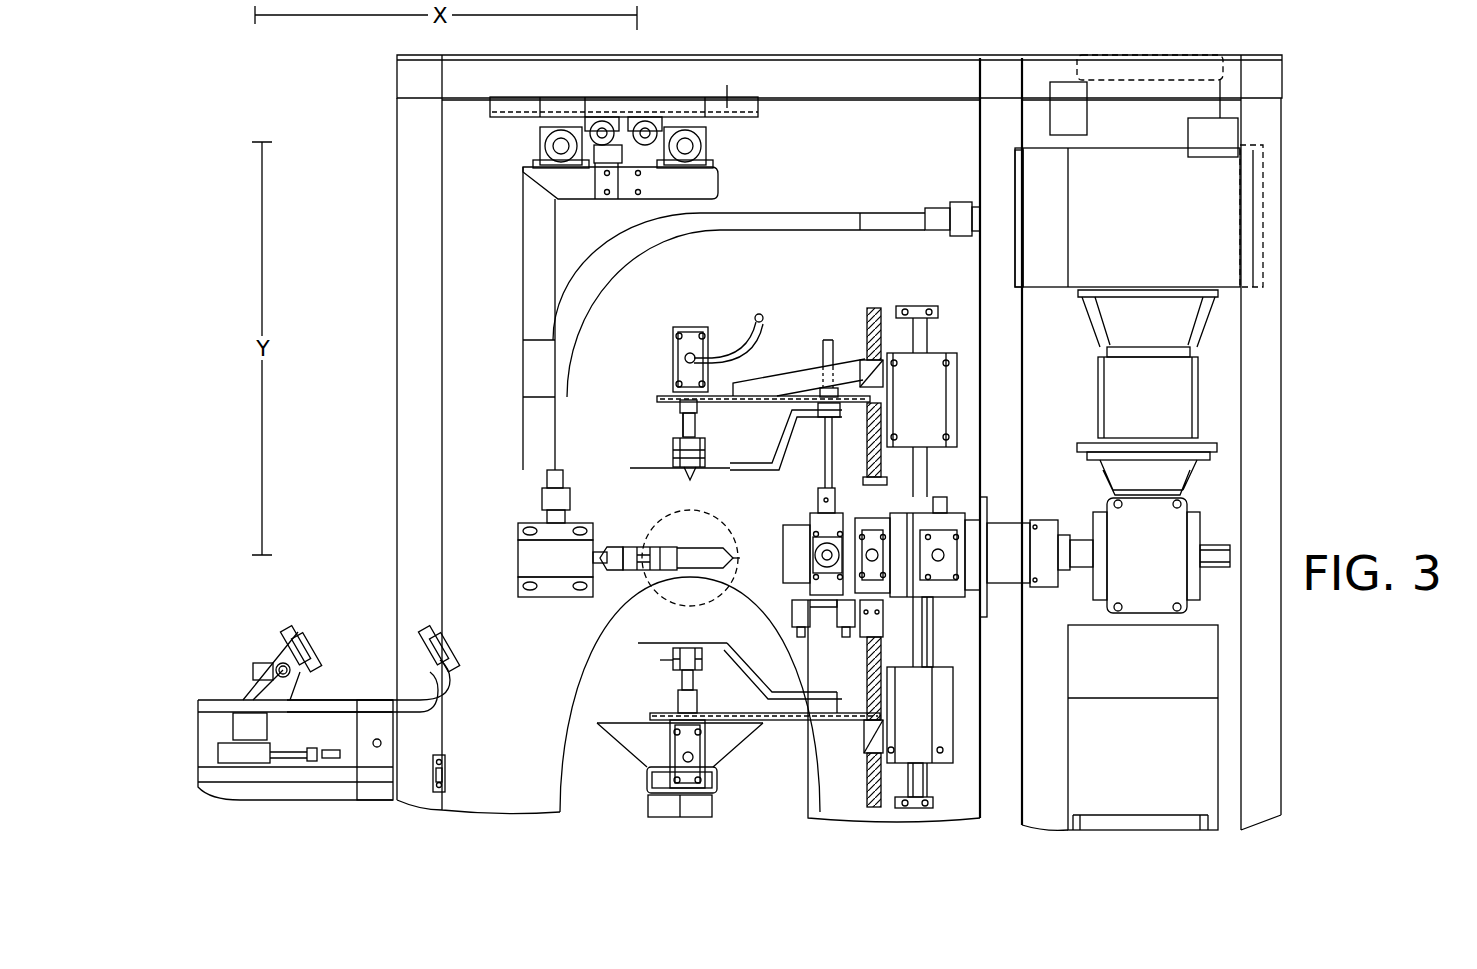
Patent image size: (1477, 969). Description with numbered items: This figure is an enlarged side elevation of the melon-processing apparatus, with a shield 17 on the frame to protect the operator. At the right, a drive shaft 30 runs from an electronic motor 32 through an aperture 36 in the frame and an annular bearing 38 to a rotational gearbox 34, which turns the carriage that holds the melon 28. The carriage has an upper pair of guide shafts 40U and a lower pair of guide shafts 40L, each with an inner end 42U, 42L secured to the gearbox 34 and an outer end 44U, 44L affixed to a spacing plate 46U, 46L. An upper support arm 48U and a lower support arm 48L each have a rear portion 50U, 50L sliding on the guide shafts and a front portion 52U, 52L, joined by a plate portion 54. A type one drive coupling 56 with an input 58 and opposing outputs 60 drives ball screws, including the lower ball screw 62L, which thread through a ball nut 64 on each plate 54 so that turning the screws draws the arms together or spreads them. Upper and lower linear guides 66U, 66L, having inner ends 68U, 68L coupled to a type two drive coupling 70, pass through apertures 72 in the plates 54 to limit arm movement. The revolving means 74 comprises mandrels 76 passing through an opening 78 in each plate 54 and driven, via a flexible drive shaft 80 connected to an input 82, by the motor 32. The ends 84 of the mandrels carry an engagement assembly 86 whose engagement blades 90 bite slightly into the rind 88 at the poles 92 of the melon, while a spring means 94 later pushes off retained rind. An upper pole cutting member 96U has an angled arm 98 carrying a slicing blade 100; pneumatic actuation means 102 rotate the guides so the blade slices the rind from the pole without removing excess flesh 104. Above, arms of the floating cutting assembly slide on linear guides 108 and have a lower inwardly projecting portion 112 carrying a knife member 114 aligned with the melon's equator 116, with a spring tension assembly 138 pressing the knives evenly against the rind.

The shield 17 is at (740, 442).
The melon 28 is at (654, 592).
The drive shaft 30 is at (1037, 593).
The electronic motor 32 is at (1148, 615).
The rotational gearbox 34 is at (985, 497).
The aperture 36 is at (1057, 490).
The annular bearing 38 is at (977, 583).
The upper pair of guide shafts 40U is at (990, 282).
The lower pair of guide shafts 40L is at (930, 775).
The inner end of upper guide shafts 42U is at (863, 477).
The inner end of lower guide shafts 42L is at (885, 598).
The outer end of upper guide shafts 44U is at (1020, 235).
The outer end of lower guide shafts 44L is at (937, 797).
The upper spacing plate 46U is at (896, 305).
The lower spacing plate 46L is at (918, 808).
The upper support arm 48U is at (803, 353).
The lower support arm 48L is at (773, 763).
The rear portion of upper support arm 50U is at (862, 405).
The rear portion of lower support arm 50L is at (950, 715).
The front portion of upper support arm 52U is at (758, 380).
The front portion of lower support arm 52L is at (765, 723).
The plate portion 54 is at (777, 402).
The type one drive coupling 56 is at (876, 558).
The input 58 is at (947, 590).
The outputs 60 is at (947, 462).
The lower ball screw 62L is at (872, 807).
The ball nut 64 is at (858, 340).
The upper linear guide 66U is at (820, 460).
The lower linear guide 66L is at (835, 652).
The inner end of upper linear guide 68U is at (890, 443).
The inner end of lower linear guide 68L is at (655, 790).
The type two drive coupling 70 is at (670, 357).
The apertures 72 is at (823, 398).
The revolving means 74 is at (667, 422).
The mandrels 76 is at (697, 443).
The opening 78 is at (690, 715).
The flexible drive shaft 80 is at (598, 253).
The input 82 is at (688, 357).
The ends of the mandrels 84 is at (683, 673).
The engagement assembly 86 is at (660, 660).
The rind 88 is at (738, 580).
The engagement blades 90 is at (692, 473).
The poles 92 is at (730, 519).
The spring means 94 is at (680, 622).
The upper pole cutting member 96U is at (927, 342).
The angled arm 98 is at (698, 763).
The slicing blade 100 is at (643, 470).
The pneumatic actuation means 102 is at (803, 634).
The flesh 104 is at (697, 546).
The linear guides 108 is at (688, 143).
The lower inwardly projecting portion 112 is at (560, 597).
The knife member 114 is at (608, 537).
The equator 116 is at (723, 552).
The spring tension assembly 138 is at (650, 120).